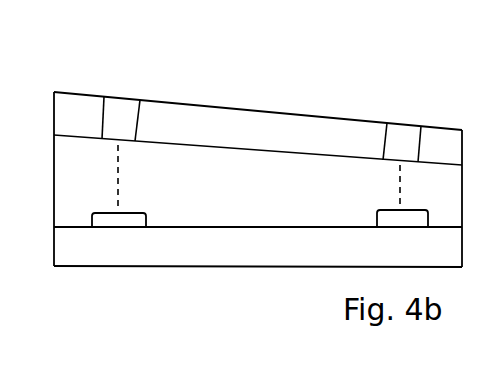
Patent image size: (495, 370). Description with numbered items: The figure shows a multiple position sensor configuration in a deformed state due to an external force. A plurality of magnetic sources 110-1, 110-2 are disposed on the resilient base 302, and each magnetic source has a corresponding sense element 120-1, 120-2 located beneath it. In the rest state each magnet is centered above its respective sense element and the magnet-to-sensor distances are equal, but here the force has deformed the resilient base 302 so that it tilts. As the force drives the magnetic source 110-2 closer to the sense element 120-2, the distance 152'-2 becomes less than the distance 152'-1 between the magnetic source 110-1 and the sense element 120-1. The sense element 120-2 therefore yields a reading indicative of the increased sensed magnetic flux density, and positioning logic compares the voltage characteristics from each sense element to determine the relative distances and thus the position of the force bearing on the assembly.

The resilient base 302 is at (54, 92).
The magnetic source 110-1 is at (121, 97).
The magnetic source 110-2 is at (395, 122).
The distance 152'-1 is at (165, 178).
The distance 152'-2 is at (361, 186).
The sense element 120-1 is at (137, 212).
The sense element 120-2 is at (381, 211).